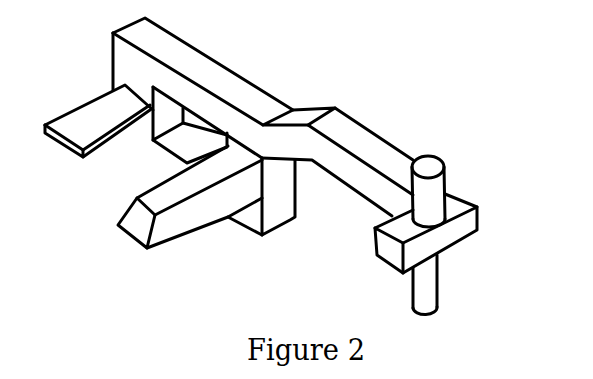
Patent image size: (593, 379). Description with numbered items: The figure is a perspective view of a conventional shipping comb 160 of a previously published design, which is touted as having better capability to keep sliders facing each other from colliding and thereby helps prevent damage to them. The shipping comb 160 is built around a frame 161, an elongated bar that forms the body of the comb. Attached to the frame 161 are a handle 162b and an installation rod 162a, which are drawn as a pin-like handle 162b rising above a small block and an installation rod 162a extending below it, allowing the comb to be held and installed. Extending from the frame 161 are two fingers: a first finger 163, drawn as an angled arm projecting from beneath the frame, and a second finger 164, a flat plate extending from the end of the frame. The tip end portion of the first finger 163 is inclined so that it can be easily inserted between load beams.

The shipping comb 160 is at (432, 143).
The frame 161 is at (345, 127).
The installation rod 162a is at (432, 285).
The handle 162b is at (437, 186).
The first finger 163 is at (203, 210).
The second finger 164 is at (78, 130).